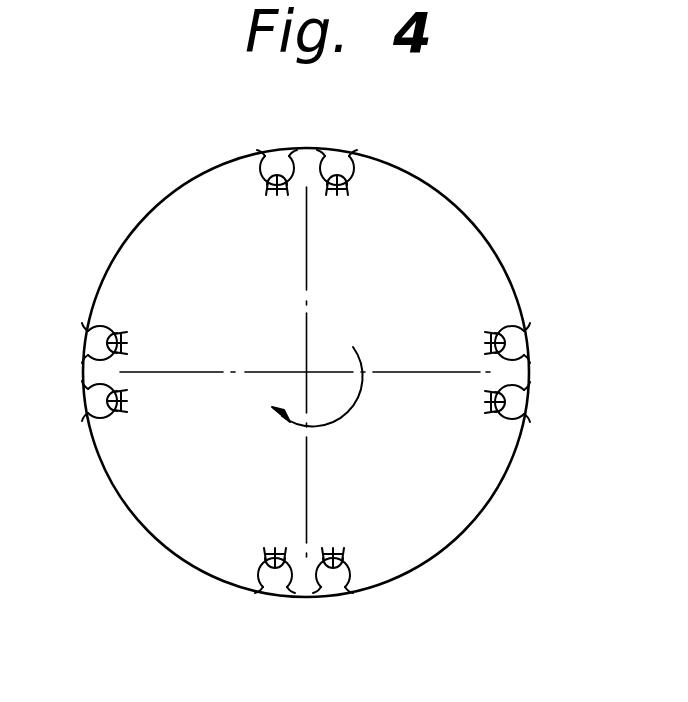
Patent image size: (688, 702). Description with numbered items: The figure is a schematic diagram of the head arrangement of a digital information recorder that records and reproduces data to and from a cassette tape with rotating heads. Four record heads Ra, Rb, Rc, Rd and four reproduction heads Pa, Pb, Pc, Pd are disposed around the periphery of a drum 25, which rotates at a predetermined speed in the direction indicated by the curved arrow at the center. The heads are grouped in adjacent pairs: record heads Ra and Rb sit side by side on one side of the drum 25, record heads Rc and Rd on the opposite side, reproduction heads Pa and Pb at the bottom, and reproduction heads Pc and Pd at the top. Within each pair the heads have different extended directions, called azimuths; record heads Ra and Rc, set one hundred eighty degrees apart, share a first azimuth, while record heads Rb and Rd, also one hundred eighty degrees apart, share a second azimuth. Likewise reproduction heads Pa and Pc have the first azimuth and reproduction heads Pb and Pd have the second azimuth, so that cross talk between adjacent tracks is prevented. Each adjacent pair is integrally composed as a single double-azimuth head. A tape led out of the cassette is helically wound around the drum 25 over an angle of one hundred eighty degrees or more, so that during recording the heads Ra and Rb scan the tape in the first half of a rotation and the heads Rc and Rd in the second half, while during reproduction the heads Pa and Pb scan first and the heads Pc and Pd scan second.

The drum 25 is at (483, 229).
The reproduction head Pa is at (352, 580).
The reproduction head Pb is at (258, 580).
The reproduction head Pc is at (258, 168).
The reproduction head Pd is at (356, 168).
The record head Ra is at (103, 414).
The record head Rb is at (103, 330).
The record head Rc is at (516, 328).
The record head Rd is at (514, 420).